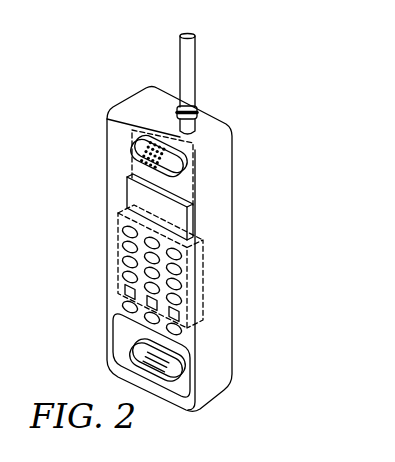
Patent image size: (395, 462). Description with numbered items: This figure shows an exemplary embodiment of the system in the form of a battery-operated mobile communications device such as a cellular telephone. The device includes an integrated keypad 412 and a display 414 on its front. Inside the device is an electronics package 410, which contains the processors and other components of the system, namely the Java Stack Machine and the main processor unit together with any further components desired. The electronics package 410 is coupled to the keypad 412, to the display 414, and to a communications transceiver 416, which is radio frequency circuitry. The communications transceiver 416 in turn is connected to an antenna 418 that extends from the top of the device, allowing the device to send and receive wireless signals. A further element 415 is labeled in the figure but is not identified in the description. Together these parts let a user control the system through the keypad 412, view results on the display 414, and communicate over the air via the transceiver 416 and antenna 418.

The electronics package 410 is at (203, 288).
The keypad 412 is at (124, 265).
The display 414 is at (125, 197).
The housing 415 is at (232, 341).
The communications transceiver 416 is at (130, 165).
The antenna 418 is at (197, 73).